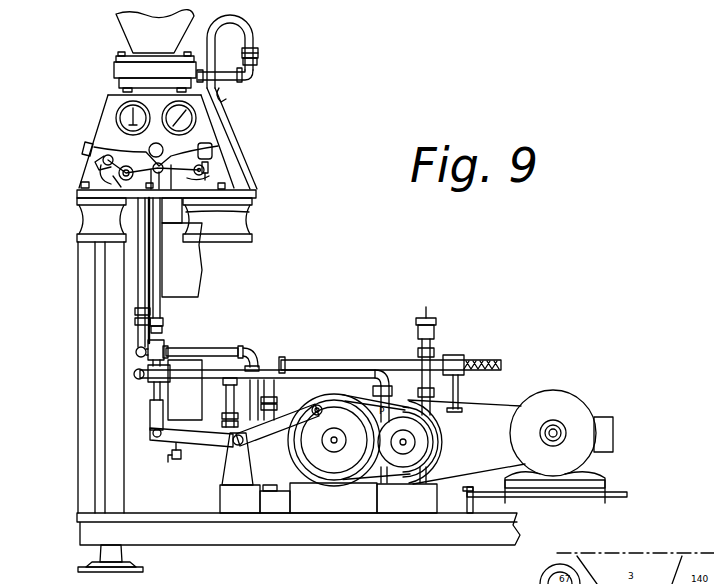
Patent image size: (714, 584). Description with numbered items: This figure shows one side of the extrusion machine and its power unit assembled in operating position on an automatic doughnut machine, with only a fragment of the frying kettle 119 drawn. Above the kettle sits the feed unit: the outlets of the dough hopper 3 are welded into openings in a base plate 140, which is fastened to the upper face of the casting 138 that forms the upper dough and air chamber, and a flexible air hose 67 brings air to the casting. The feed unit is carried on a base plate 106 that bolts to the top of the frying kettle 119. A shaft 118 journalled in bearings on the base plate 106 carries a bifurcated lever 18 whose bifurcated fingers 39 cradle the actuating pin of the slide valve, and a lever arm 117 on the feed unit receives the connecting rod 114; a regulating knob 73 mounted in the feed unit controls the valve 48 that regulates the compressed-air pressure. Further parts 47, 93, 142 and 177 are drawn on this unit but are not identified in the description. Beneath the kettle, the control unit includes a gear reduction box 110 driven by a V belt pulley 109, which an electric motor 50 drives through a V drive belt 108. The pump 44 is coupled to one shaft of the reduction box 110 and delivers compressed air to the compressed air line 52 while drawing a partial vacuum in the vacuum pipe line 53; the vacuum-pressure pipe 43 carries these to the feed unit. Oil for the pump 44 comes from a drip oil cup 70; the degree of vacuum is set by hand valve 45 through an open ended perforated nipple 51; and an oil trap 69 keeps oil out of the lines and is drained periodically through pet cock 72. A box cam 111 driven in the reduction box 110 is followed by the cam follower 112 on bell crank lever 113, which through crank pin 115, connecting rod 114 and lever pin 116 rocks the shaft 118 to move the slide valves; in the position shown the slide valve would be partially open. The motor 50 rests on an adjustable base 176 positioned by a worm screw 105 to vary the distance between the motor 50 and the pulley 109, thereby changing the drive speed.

The dough hopper 3 is at (128, 26).
The base plate 140 is at (115, 59).
The casting 138 is at (118, 80).
The housing with gauges 47 is at (123, 115).
The regulating knob 73 is at (104, 156).
The bracket 93 is at (83, 149).
The bolt 177 is at (80, 184).
The connecting rod 114 is at (124, 223).
The vacuum-pressure pipe 43 is at (139, 277).
The valve 48 is at (164, 330).
The flexible air hose 67 is at (247, 31).
The coupling 142 is at (259, 56).
The bifurcated fingers 39 is at (228, 97).
The bifurcated lever 18 is at (207, 150).
The shaft 118 is at (208, 163).
The lever arm 117 is at (196, 176).
The base plate 106 is at (244, 190).
The lever pin 116 is at (194, 201).
The frying kettle 119 is at (243, 228).
The compressed air line 52 is at (245, 378).
The vacuum pipe line 53 is at (388, 366).
The drip oil cup 70 is at (431, 320).
The hand valve 45 is at (453, 356).
The open ended perforated nipple 51 is at (480, 361).
The V drive belt 108 is at (481, 394).
The electric motor 50 is at (563, 405).
The oil trap 69 is at (185, 390).
The crank pin 115 is at (142, 434).
The pump 44 is at (428, 444).
The V belt pulley 109 is at (446, 454).
The bell crank lever 113 is at (212, 441).
The cam follower 112 is at (252, 446).
The pet cock 72 is at (178, 468).
The adjustable base 176 is at (608, 485).
The worm screw 105 is at (628, 495).
The box cam 111 is at (336, 487).
The gear reduction box 110 is at (364, 508).